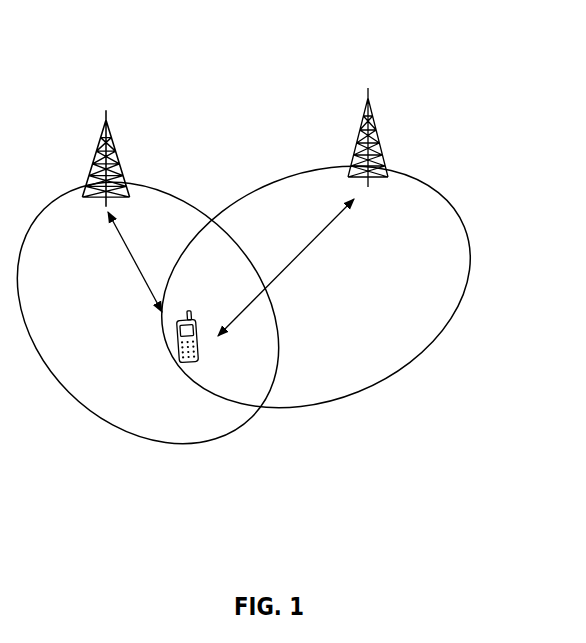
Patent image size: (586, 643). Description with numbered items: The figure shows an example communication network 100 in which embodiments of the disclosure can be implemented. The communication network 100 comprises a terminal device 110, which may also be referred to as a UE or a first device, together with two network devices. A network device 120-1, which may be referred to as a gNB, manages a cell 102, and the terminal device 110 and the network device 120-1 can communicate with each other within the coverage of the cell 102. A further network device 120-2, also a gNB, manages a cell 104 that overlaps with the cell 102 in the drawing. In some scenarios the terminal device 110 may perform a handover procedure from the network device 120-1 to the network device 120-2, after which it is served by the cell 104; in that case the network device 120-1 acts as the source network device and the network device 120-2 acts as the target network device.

The communication network 100 is at (271, 56).
The cell 102 is at (471, 240).
The cell 104 is at (158, 195).
The terminal device 110 is at (182, 318).
The network device 120-1 is at (384, 110).
The network device 120-2 is at (112, 128).